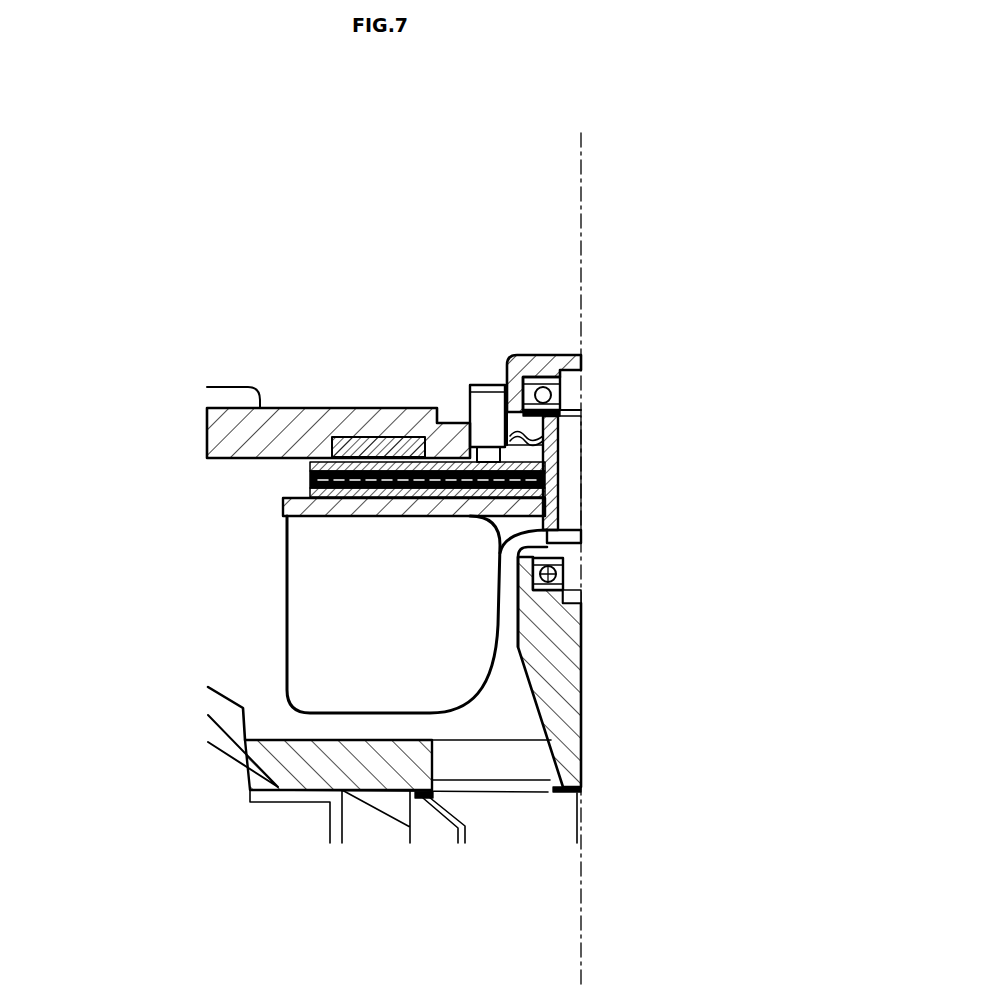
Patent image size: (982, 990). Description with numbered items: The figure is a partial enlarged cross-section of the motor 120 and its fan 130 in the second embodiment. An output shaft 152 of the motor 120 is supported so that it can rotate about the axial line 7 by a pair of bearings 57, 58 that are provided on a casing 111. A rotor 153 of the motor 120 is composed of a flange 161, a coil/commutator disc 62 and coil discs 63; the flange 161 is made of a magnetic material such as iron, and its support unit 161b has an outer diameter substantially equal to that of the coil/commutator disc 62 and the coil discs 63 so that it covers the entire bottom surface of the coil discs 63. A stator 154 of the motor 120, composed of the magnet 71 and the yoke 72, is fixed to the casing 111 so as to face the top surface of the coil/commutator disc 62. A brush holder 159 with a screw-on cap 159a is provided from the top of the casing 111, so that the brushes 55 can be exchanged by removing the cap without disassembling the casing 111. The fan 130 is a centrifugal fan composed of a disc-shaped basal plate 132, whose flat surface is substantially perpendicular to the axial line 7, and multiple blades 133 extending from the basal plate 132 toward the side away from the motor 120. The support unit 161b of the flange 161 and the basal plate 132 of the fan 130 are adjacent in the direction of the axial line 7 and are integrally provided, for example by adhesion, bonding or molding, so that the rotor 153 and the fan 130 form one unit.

The axial line 7 is at (582, 172).
The motor 120 is at (768, 188).
The stator 154 is at (162, 297).
The magnet 71 is at (333, 457).
The yoke 72 is at (337, 437).
The brushes 55 is at (440, 445).
The brush holder 159 is at (485, 456).
The bolt head 159a is at (487, 420).
The bearing 57 is at (526, 377).
The output shaft 152 is at (573, 390).
The rotor 153 is at (645, 388).
The coil/commutator disc 62 is at (552, 445).
The coil discs 63 is at (548, 480).
The flange 161 is at (552, 506).
The support unit 161b is at (554, 524).
The fan 130 is at (755, 605).
The basal plate 132 is at (437, 517).
The blades 133 is at (430, 632).
The bearing 58 is at (565, 594).
The casing 111 is at (540, 723).